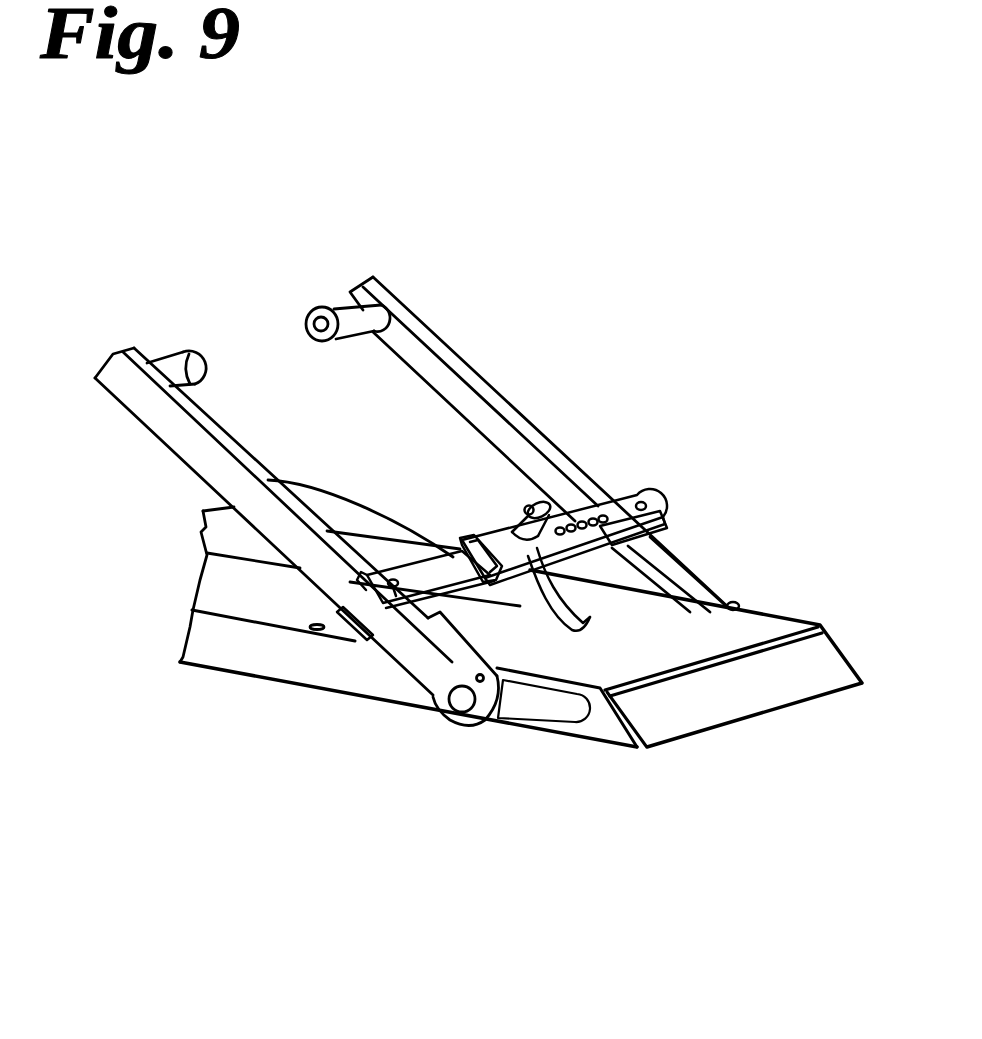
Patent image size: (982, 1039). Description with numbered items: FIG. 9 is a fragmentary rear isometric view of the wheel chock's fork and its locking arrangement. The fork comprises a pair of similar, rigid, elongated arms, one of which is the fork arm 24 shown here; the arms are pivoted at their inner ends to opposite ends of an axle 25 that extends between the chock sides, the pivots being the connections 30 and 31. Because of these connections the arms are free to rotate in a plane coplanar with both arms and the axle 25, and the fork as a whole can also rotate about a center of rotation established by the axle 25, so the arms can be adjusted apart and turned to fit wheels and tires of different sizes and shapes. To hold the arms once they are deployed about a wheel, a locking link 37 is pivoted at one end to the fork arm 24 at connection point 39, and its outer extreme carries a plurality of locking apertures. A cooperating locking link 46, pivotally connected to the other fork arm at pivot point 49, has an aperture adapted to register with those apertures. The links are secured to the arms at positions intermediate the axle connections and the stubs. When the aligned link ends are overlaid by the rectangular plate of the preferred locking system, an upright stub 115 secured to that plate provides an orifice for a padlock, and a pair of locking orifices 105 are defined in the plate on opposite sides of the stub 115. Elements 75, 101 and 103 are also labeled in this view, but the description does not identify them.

The fork arm 24 is at (305, 566).
The axle 25 is at (521, 692).
The connection 30 is at (425, 703).
The connection 31 is at (730, 600).
The locking link 37 is at (623, 507).
The connection point 39 is at (650, 502).
The locking link 46 is at (270, 479).
The pivot point 49 is at (385, 578).
The platform 75 is at (725, 693).
The clip 101 is at (473, 525).
The adjustment plate 103 is at (602, 503).
The locking orifices 105 is at (593, 597).
The upright stub 115 is at (523, 520).